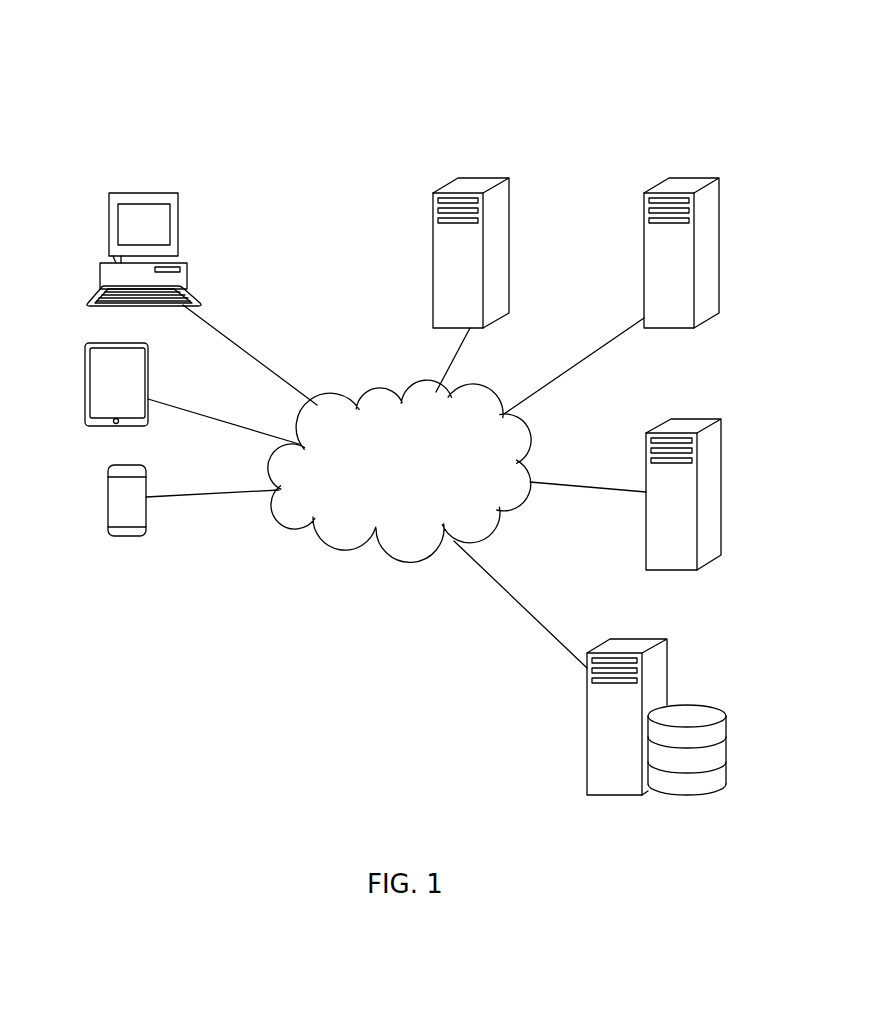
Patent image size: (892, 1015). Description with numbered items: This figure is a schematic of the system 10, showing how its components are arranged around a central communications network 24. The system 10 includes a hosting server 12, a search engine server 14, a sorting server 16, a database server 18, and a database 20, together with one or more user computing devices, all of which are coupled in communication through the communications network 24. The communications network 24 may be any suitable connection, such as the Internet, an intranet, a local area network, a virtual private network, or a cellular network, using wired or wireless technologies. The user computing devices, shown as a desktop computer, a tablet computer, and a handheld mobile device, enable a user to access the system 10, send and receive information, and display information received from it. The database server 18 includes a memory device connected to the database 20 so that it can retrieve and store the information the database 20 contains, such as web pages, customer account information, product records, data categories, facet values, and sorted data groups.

The system 10 is at (559, 65).
The hosting server 12 is at (521, 172).
The search engine server 14 is at (727, 172).
The sorting server 16 is at (722, 410).
The database server 18 is at (680, 648).
The database 20 is at (729, 698).
The communications network 24 is at (408, 480).